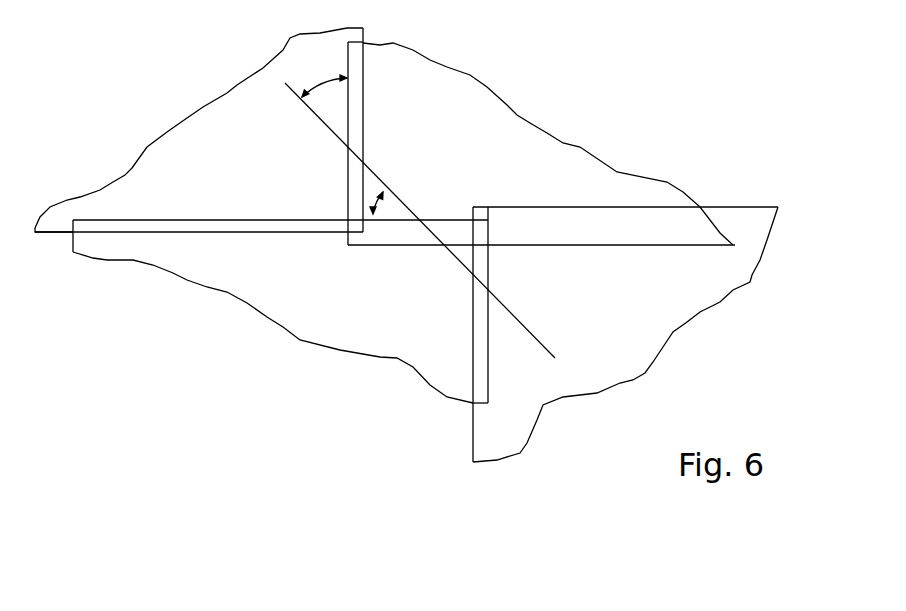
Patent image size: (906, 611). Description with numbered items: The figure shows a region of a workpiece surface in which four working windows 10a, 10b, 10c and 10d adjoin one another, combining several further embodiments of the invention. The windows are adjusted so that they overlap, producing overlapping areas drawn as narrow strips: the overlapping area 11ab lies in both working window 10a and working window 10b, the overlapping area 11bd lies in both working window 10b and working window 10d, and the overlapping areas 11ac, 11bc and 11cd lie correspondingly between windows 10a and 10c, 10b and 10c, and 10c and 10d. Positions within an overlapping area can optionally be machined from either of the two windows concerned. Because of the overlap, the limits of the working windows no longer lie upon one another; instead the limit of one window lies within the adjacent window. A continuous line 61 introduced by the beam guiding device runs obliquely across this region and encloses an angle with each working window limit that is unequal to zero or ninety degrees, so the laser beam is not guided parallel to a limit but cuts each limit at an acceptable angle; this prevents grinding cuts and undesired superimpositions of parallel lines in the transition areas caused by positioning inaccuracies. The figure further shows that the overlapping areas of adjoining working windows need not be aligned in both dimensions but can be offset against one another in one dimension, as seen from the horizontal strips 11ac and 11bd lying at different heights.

The working window 10a is at (170, 133).
The working window 10b is at (513, 123).
The working window 10c is at (267, 308).
The working window 10d is at (655, 350).
The overlapping area 11ab is at (360, 62).
The overlapping area 11ac is at (100, 227).
The overlapping area 11bc is at (395, 238).
The overlapping area 11bd is at (683, 225).
The overlapping area 11cd is at (483, 380).
The line 61 is at (530, 328).